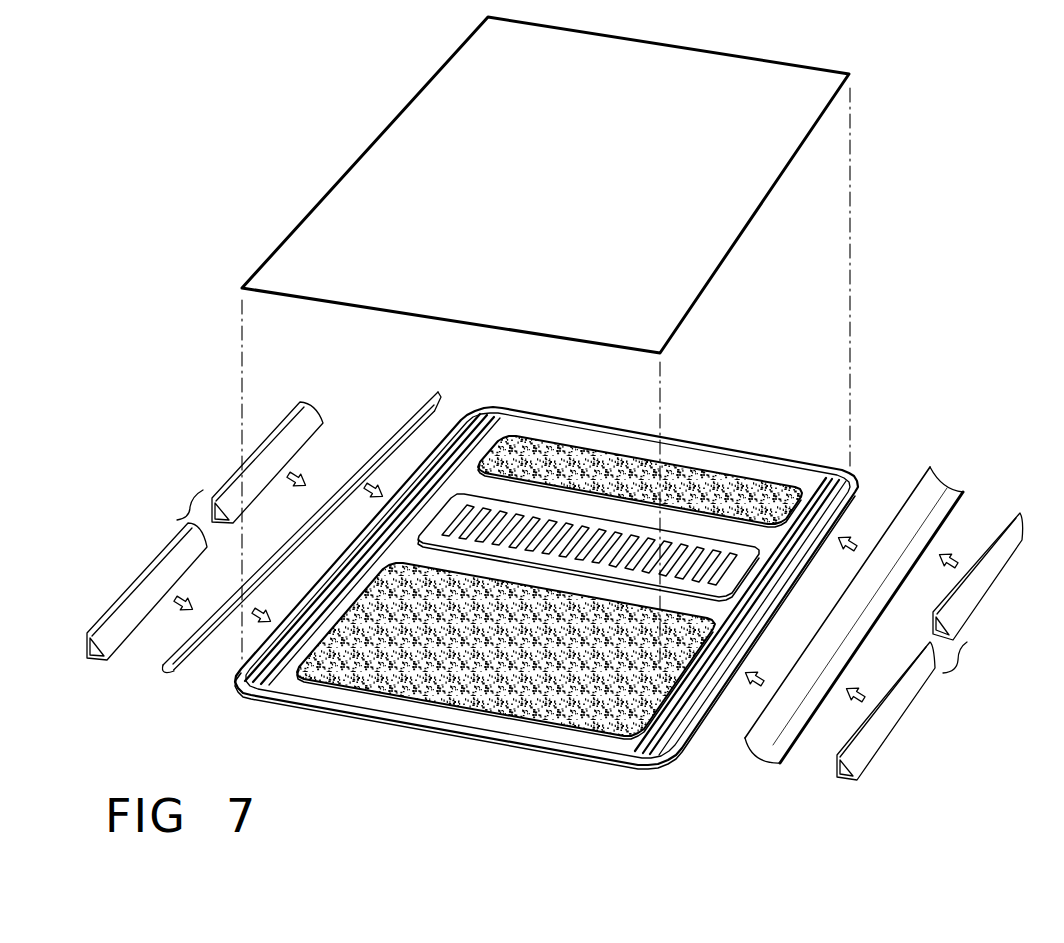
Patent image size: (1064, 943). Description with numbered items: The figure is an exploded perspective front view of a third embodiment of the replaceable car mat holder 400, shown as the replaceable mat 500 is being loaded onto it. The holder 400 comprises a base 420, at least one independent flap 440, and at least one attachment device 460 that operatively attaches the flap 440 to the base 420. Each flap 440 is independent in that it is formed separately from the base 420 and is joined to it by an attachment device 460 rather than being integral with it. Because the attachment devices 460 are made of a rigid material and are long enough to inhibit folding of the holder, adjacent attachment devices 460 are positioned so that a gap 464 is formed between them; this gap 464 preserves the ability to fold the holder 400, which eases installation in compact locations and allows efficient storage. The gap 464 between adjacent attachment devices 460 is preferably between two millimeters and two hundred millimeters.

The replaceable mat 500 is at (431, 113).
The replaceable car mat holder 400 is at (546, 620).
The base 420 is at (333, 708).
The independent flap 440 is at (378, 442).
The attachment device 460 is at (232, 492).
The gap 464 is at (186, 498).